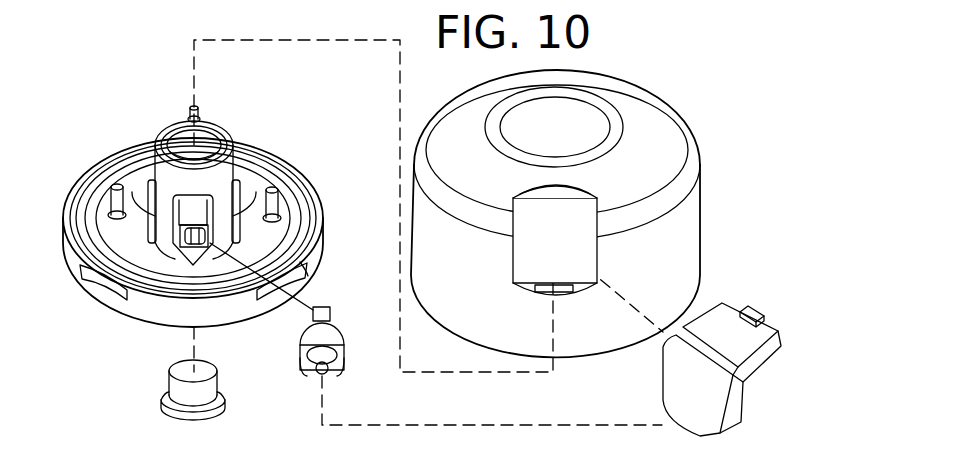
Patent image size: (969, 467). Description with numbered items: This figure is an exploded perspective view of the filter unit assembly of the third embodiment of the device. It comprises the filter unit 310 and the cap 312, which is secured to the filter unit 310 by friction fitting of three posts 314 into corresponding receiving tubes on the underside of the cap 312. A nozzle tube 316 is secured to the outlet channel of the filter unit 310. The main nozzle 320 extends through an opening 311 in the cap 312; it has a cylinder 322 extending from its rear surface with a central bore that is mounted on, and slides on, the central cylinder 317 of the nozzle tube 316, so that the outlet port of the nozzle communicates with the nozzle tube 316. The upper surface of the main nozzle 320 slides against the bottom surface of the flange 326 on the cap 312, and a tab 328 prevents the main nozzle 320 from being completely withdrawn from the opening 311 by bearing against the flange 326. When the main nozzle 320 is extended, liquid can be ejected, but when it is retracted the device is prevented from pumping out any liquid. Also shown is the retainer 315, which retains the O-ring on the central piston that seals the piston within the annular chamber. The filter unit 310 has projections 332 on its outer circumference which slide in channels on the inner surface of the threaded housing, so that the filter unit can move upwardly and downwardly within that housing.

The filter unit 310 is at (285, 170).
The opening 311 is at (530, 243).
The cap 312 is at (655, 95).
The posts 314 is at (197, 110).
The retainer 315 is at (217, 380).
The nozzle tube 316 is at (343, 360).
The central cylinder 317 is at (320, 376).
The main nozzle 320 is at (778, 330).
The cylinder 322 is at (81, 272).
The flange 326 is at (574, 190).
The tab 328 is at (752, 312).
The projections 332 is at (307, 272).